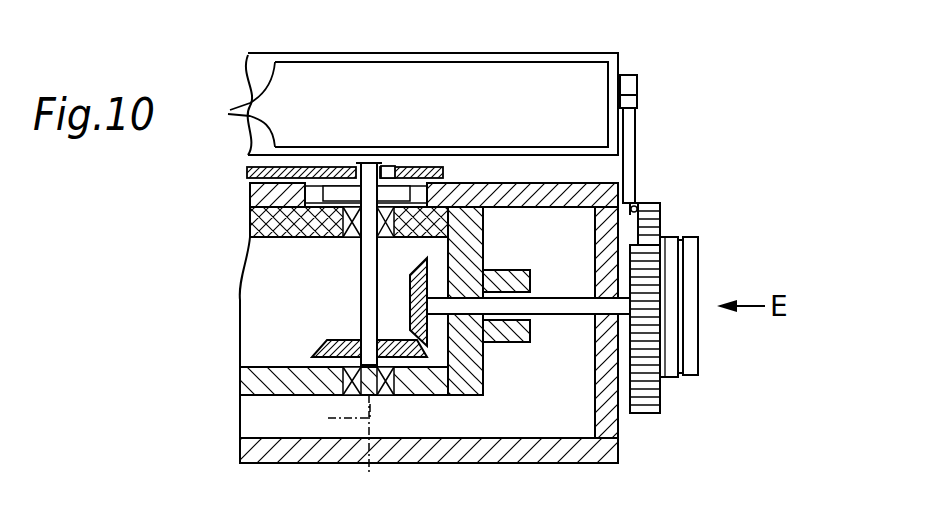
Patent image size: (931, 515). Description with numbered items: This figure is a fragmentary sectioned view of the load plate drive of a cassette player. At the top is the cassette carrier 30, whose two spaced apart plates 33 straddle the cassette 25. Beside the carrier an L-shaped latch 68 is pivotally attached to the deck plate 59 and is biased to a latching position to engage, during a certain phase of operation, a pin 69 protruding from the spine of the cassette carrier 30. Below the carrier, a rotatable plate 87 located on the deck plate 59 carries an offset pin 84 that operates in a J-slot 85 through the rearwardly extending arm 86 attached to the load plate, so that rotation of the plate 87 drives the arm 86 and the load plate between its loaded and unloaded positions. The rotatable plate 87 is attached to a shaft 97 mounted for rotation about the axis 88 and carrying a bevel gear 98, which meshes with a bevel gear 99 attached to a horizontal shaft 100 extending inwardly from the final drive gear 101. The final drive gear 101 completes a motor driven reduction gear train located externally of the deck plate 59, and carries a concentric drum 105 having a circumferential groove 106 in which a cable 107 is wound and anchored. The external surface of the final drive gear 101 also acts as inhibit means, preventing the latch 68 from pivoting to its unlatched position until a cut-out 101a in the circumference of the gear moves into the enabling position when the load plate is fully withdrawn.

The cassette carrier 30 is at (565, 40).
The cassette 25 is at (537, 127).
The plates 33 is at (238, 105).
The rearwardly extending arm 86 is at (246, 174).
The deck plate 59 is at (250, 198).
The rotatable plate 87 is at (335, 199).
The shaft 97 is at (362, 251).
The bevel gear 98 is at (340, 343).
The bevel gear 99 is at (410, 282).
The offset pin 84 is at (366, 165).
The J-slot 85 is at (390, 165).
The horizontal shaft 100 is at (570, 314).
The axis 88 is at (333, 435).
The L-shaped latch 68 is at (637, 83).
The pin 69 is at (637, 106).
The final drive gear 101 is at (658, 410).
The cut-out 101a is at (640, 205).
The cable 107 is at (679, 240).
The circumferential groove 106 is at (683, 275).
The drum 105 is at (690, 353).